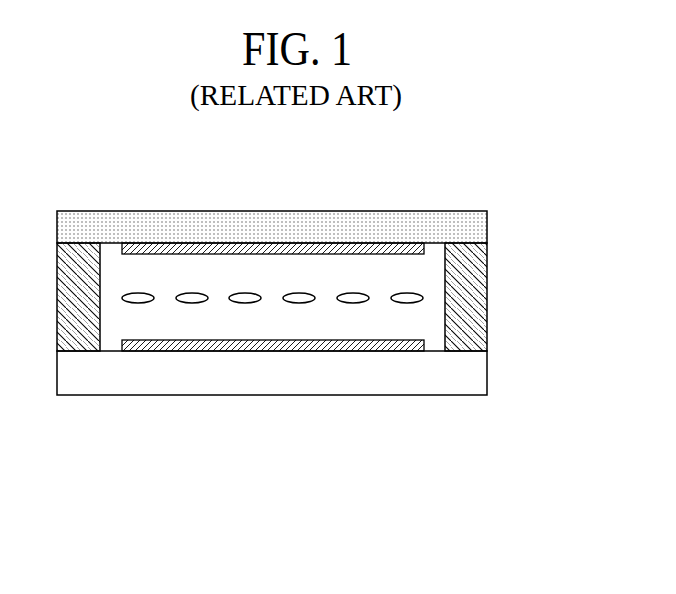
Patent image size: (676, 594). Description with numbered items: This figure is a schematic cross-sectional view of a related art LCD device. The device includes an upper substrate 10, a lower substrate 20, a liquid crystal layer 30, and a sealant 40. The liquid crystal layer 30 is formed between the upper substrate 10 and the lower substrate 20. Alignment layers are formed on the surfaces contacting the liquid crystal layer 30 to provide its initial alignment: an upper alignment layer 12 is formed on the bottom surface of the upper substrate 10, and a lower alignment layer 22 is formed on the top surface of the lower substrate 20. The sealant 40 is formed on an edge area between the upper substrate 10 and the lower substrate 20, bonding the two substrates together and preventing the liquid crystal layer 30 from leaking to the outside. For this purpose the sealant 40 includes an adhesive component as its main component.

The upper substrate 10 is at (485, 228).
The upper alignment layer 12 is at (273, 253).
The lower substrate 20 is at (480, 380).
The lower alignment layer 22 is at (273, 351).
The liquid crystal layer 30 is at (348, 296).
The sealant 40 is at (477, 305).